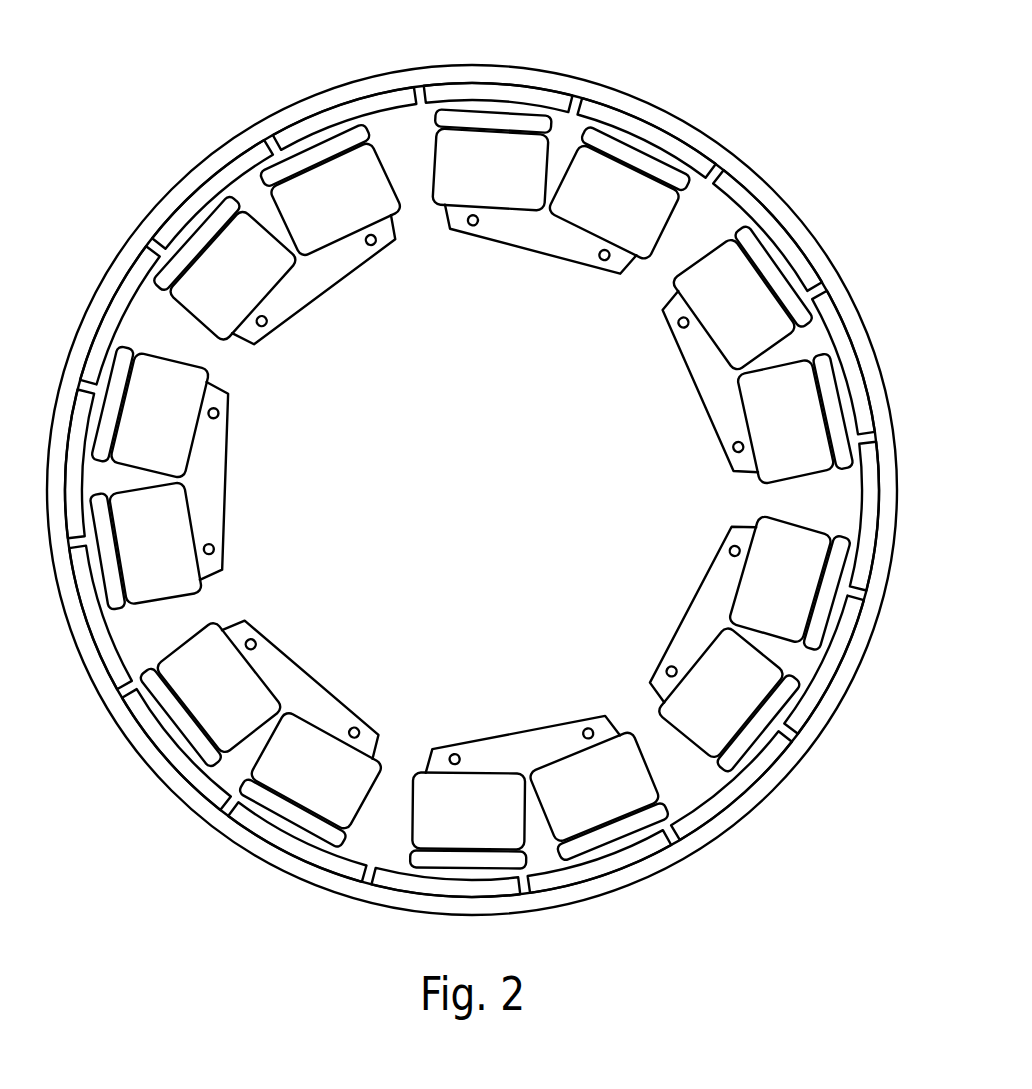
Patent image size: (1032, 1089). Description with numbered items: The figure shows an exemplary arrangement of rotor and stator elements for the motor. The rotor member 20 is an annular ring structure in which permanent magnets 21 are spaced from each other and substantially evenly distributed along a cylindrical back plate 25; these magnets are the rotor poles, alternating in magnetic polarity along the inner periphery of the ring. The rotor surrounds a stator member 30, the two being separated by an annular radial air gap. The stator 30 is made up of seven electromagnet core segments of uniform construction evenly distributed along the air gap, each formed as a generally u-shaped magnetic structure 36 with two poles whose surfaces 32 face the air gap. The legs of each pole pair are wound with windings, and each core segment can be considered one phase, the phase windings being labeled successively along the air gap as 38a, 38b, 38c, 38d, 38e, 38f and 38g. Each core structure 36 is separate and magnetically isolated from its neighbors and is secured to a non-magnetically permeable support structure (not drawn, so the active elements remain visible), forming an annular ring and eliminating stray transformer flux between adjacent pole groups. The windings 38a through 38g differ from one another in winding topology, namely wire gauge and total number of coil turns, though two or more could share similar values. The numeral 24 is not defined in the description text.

The rotor member 20 is at (886, 335).
The permanent magnets 21 is at (738, 188).
The base plate 24 is at (537, 241).
The cylindrical back plate 25 is at (675, 115).
The stator member 30 is at (289, 437).
The pole surfaces 32 is at (512, 133).
The u-shaped magnetic structure 36 is at (473, 220).
The phase winding 38a is at (552, 182).
The phase winding 38b is at (725, 278).
The phase winding 38c is at (798, 560).
The phase winding 38d is at (603, 752).
The phase winding 38e is at (353, 780).
The phase winding 38f is at (194, 570).
The phase winding 38g is at (358, 183).